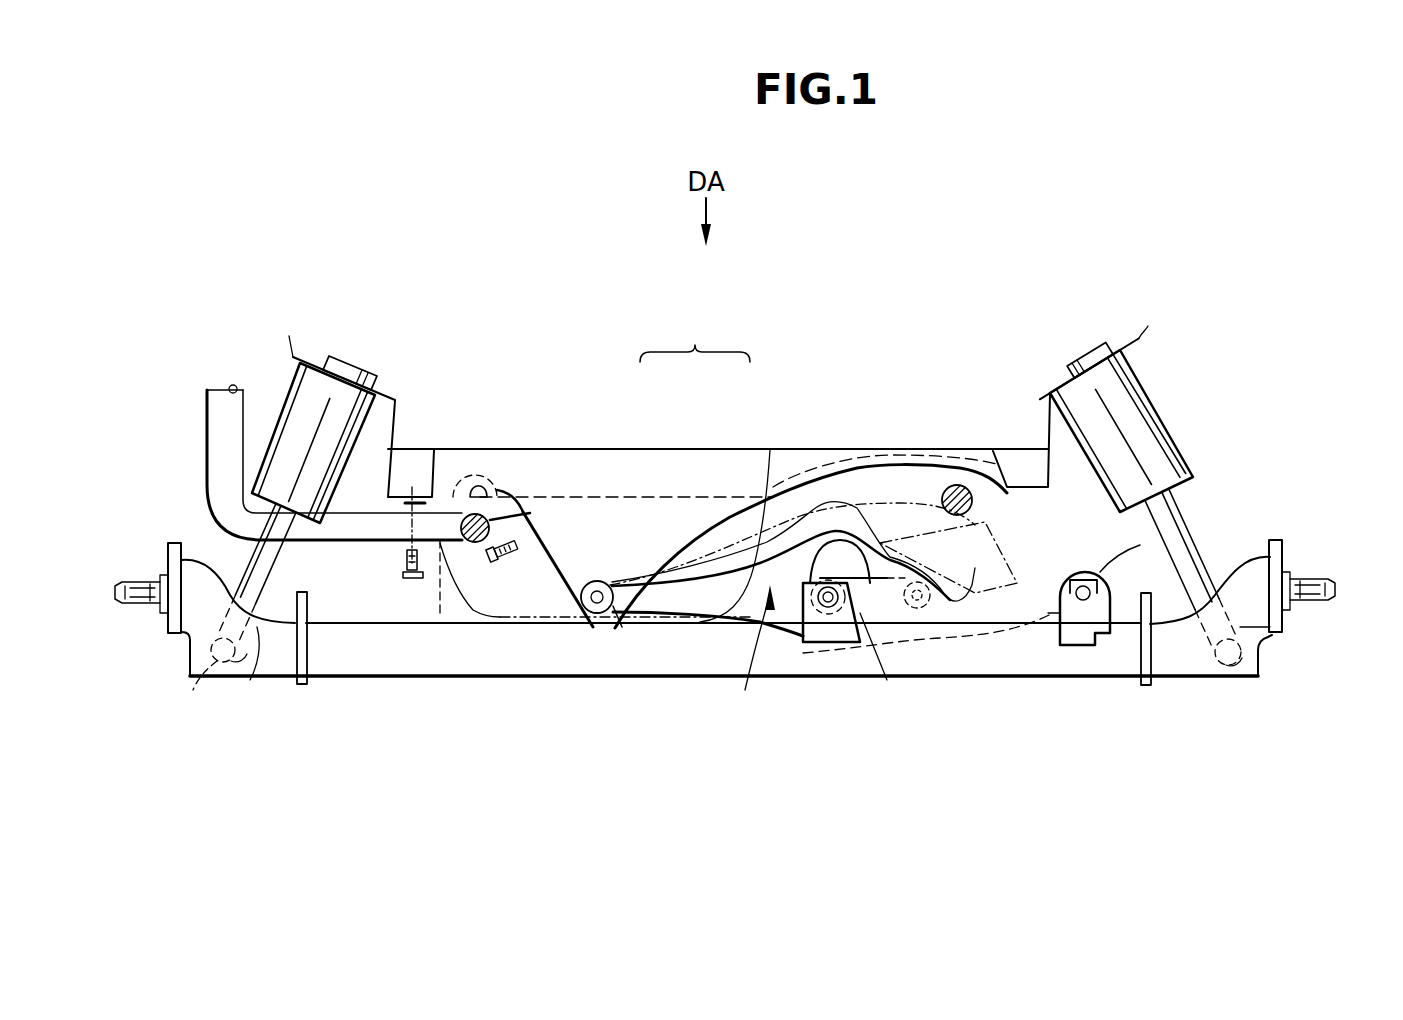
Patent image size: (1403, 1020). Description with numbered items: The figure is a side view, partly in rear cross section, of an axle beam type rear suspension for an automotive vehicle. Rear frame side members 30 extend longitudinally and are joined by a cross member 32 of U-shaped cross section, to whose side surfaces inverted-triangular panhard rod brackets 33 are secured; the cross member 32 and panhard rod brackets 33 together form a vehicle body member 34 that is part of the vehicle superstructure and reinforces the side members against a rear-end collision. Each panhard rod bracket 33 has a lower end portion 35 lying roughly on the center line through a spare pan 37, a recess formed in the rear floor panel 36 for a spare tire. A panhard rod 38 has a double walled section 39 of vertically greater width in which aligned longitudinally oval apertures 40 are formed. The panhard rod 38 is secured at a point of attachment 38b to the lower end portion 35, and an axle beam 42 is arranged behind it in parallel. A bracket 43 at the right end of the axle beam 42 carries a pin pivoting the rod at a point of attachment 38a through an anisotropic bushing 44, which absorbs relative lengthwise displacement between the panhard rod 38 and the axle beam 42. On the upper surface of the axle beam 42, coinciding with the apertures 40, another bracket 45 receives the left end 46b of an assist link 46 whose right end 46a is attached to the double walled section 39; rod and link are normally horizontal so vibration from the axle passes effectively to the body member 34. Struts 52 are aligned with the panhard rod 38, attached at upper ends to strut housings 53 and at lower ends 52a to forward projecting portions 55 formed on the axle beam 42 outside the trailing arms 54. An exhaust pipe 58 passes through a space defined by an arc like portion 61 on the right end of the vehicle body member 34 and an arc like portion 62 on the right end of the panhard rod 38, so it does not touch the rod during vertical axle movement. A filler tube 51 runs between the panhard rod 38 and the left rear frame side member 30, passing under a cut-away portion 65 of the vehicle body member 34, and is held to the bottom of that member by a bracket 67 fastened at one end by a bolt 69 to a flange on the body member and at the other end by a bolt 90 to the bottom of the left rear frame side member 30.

The rear frame side members 30 is at (435, 490).
The cross member 32 is at (660, 495).
The panhard rod brackets 33 is at (730, 543).
The vehicle body member 34 is at (695, 337).
The lower end portion 35 is at (600, 615).
The rear floor panel 36 is at (826, 447).
The spare pan 37 is at (478, 615).
The panhard rod 38 is at (745, 690).
The point of attachment to the axle beam 38a is at (1083, 578).
The point of attachment 38b is at (624, 628).
The double walled section 39 is at (872, 640).
The oval apertures 40 is at (840, 552).
The axle beam 42 is at (1056, 695).
The bracket 43 is at (1112, 648).
The anisotropic bushing 44 is at (1140, 545).
The bracket 45 is at (842, 633).
The assist link 46 is at (865, 612).
The right end 46a is at (921, 608).
The left end 46b is at (820, 632).
The filler tube 51 is at (458, 550).
The struts 52 is at (275, 395).
The lower ends 52a is at (250, 672).
The strut housings 53 is at (315, 358).
The trailing arms 54 is at (303, 690).
The forward projecting portions 55 is at (210, 665).
The exhaust pipe 58 is at (950, 488).
The arc like portion 61 is at (950, 480).
The arc like portion 62 is at (977, 596).
The cut-away portion 65 is at (482, 482).
The bracket 67 is at (515, 500).
The bolt 69 is at (498, 553).
The bolt 90 is at (412, 580).